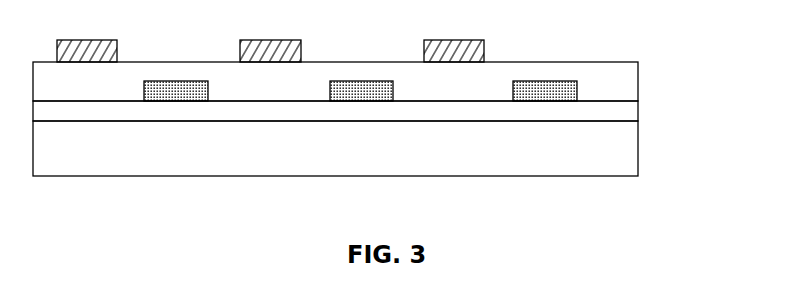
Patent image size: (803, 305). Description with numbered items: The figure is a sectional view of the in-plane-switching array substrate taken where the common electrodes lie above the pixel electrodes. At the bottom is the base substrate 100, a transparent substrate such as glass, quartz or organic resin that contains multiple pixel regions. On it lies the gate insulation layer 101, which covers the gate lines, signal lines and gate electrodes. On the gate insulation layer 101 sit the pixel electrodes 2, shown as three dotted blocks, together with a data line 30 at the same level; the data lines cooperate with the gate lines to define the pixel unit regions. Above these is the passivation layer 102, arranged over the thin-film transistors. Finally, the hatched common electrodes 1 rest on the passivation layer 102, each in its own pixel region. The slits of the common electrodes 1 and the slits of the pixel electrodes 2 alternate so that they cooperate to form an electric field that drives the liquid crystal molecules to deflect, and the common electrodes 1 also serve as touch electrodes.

The common electrode 1 is at (484, 52).
The pixel electrode 2 is at (358, 91).
The data line 30 is at (548, 91).
The base substrate 100 is at (618, 149).
The gate insulation layer 101 is at (613, 110).
The passivation layer 102 is at (613, 80).